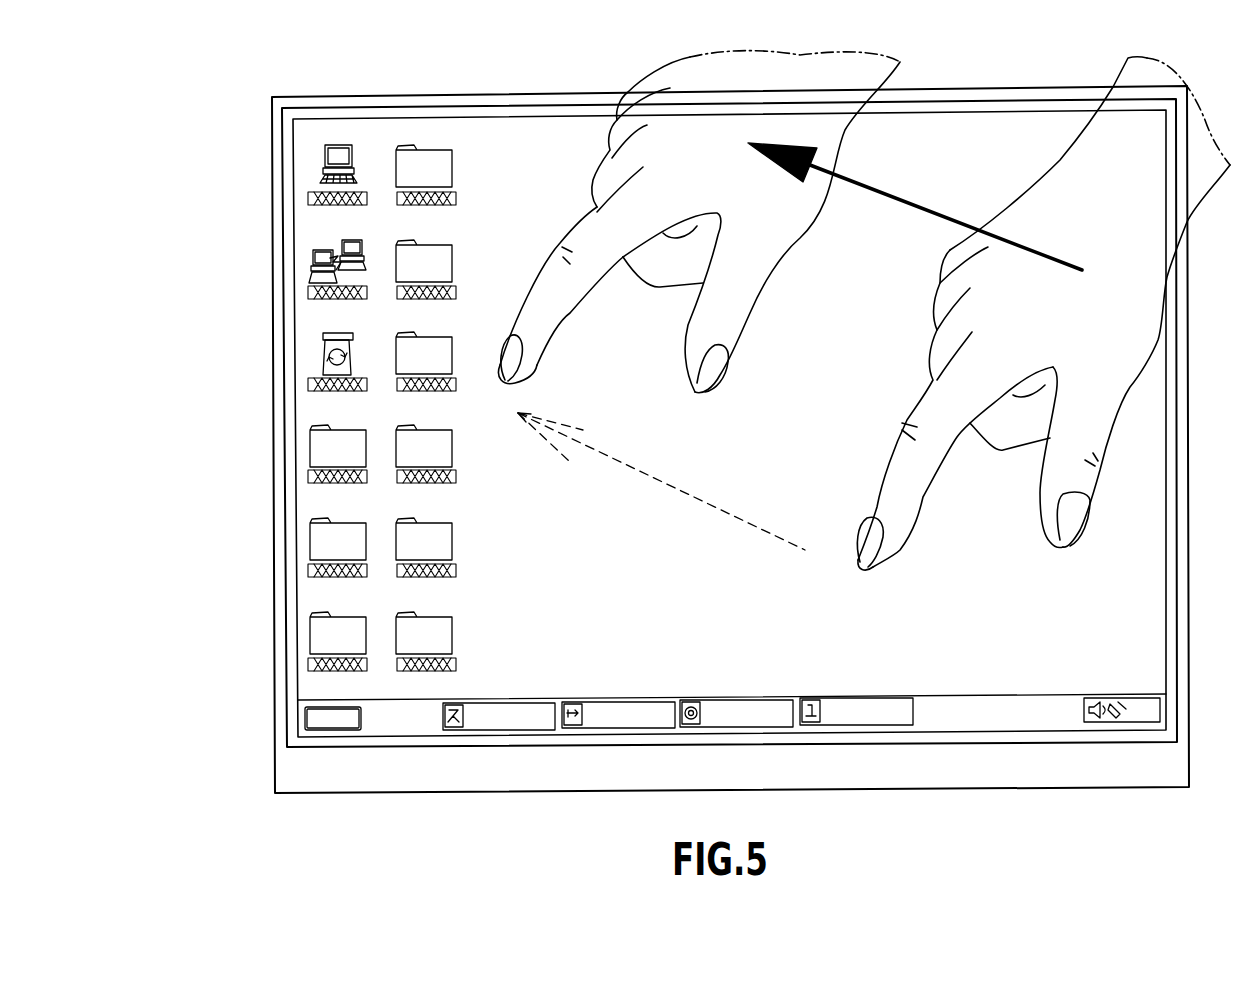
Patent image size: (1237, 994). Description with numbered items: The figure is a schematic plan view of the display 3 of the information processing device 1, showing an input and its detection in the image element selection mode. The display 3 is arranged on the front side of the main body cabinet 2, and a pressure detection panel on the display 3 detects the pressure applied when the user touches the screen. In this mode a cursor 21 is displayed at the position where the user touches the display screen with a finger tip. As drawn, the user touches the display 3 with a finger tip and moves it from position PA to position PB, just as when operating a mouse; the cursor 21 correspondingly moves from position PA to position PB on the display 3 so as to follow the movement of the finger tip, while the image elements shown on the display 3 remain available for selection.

The information processing device 1 is at (498, 82).
The main body cabinet 2 is at (275, 143).
The display 3 is at (336, 226).
The cursor 21 is at (487, 390).